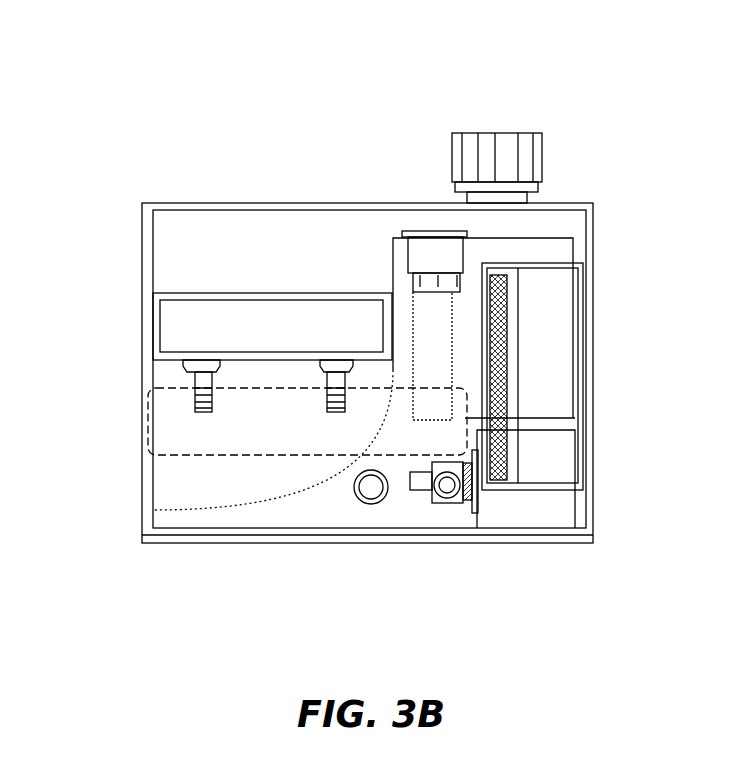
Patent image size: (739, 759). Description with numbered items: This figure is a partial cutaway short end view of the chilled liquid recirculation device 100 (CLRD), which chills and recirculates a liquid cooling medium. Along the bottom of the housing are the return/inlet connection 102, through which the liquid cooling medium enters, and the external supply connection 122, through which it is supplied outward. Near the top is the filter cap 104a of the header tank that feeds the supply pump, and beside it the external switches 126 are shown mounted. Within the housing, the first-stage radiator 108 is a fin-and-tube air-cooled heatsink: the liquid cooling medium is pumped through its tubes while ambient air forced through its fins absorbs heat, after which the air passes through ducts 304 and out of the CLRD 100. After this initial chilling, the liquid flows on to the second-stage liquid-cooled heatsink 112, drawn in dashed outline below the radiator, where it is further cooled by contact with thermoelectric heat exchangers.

The chilled liquid recirculation device 100 is at (88, 87).
The filter cap 104a is at (518, 157).
The external switches 126 is at (470, 270).
The first-stage radiator 108 is at (188, 328).
The second-stage liquid-cooled heatsink 112 is at (188, 425).
The ducts 304 is at (200, 492).
The return/inlet connection 102 is at (367, 490).
The external supply connection 122 is at (447, 490).